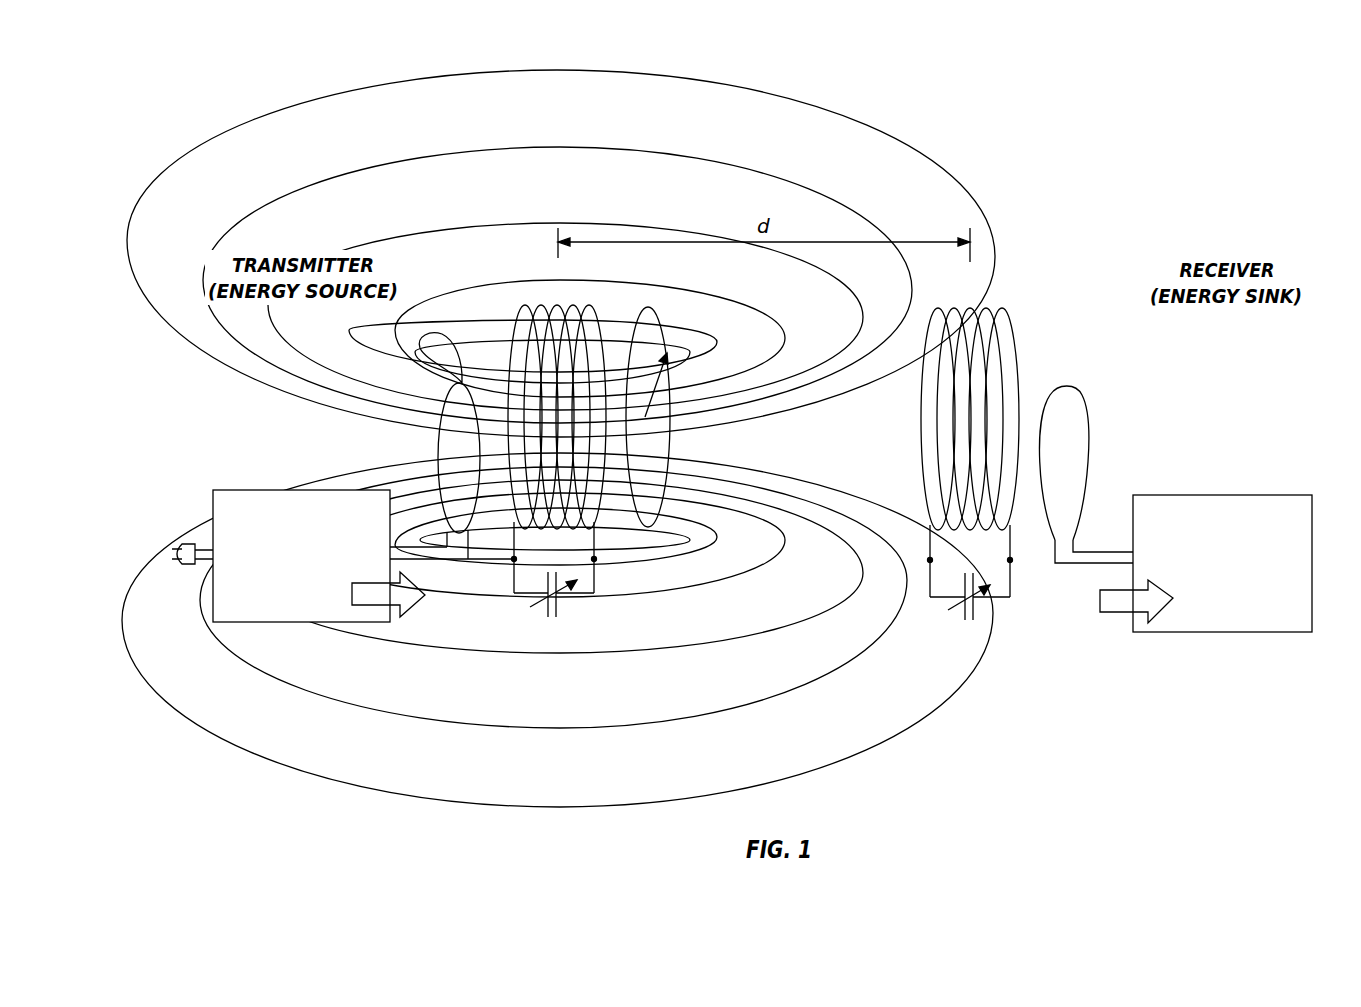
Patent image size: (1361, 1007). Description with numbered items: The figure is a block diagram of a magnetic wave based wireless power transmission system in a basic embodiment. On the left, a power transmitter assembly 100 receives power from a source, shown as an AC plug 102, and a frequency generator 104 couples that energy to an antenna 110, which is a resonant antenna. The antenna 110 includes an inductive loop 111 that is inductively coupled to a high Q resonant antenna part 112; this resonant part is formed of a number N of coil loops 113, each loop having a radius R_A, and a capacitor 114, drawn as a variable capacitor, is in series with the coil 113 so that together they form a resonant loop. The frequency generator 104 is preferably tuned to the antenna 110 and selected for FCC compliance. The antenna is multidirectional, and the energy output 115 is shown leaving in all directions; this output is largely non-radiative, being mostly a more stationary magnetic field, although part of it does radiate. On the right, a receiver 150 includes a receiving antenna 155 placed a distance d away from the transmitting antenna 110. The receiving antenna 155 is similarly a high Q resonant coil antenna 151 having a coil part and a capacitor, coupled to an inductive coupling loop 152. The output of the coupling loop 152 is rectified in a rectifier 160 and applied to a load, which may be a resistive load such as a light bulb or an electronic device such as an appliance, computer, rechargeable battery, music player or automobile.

The power transmitter assembly 100 is at (262, 100).
The AC plug 102 is at (180, 540).
The frequency generator 104 is at (230, 490).
The antenna 110 is at (541, 489).
The inductive loop 111 is at (440, 345).
The high Q resonant antenna part 112 is at (573, 303).
The coil loops 113 is at (603, 317).
The capacitor 114 is at (575, 607).
The energy output 115 is at (786, 700).
The receiver 150 is at (1103, 250).
The high Q resonant coil antenna 151 is at (927, 580).
The inductive coupling loop 152 is at (1067, 386).
The receiving antenna 155 is at (987, 513).
The rectifier 160 is at (1290, 497).